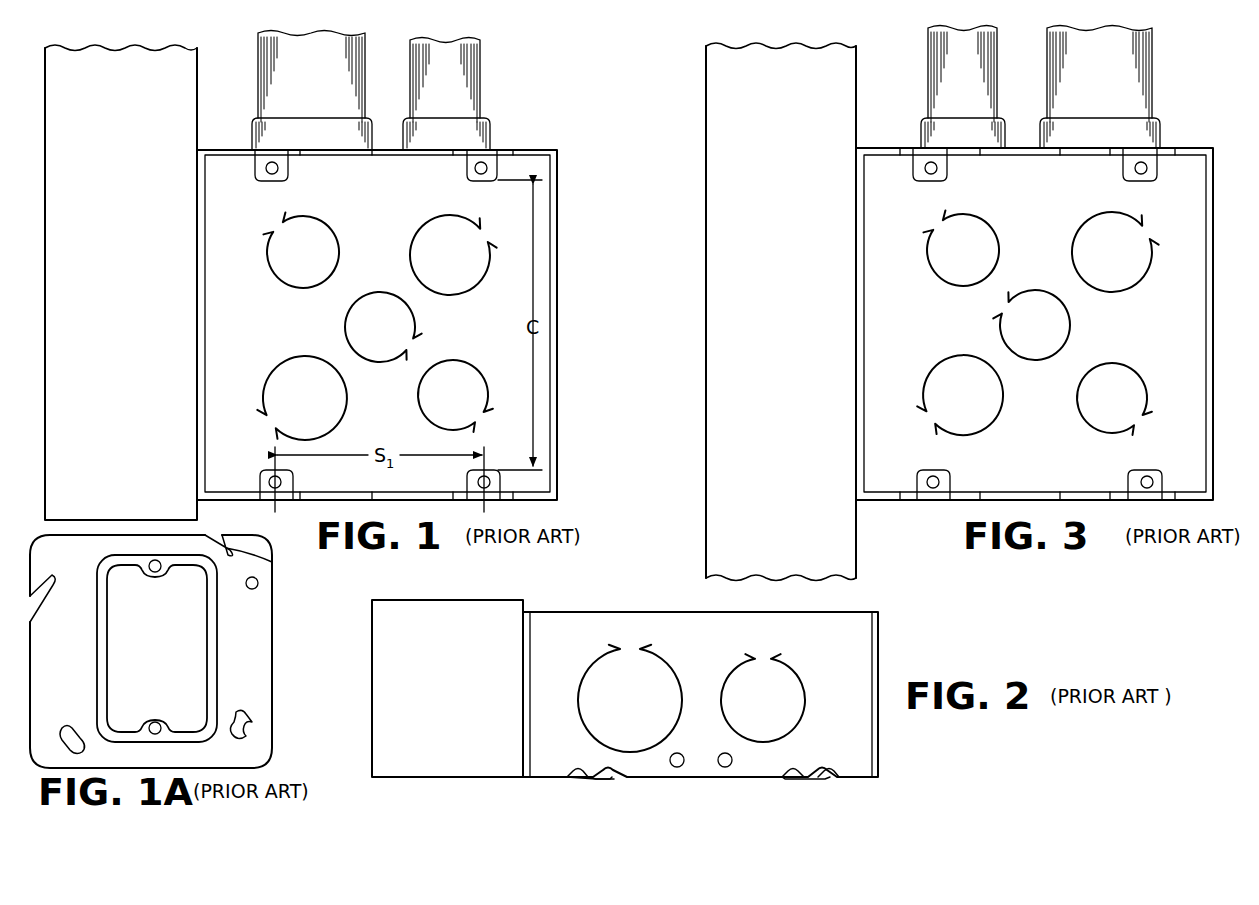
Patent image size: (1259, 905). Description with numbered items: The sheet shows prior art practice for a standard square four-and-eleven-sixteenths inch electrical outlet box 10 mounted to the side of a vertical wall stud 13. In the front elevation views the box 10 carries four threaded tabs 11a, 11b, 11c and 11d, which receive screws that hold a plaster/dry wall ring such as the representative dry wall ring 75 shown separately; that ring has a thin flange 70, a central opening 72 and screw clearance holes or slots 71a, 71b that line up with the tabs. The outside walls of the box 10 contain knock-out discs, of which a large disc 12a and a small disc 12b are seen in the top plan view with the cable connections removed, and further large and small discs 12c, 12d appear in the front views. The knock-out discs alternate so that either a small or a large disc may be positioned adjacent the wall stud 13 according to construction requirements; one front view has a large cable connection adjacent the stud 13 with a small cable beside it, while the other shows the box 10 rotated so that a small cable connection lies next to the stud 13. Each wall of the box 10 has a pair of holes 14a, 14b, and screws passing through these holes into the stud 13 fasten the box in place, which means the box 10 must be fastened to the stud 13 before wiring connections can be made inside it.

In FIG. 1, the electrical outlet box 10 is at (542, 150).
In FIG. 2, the electrical outlet box 10 is at (612, 612).
In FIG. 3, the electrical outlet box 10 is at (1182, 148).
In FIG. 1, the threaded tab 11a is at (282, 172).
In FIG. 2, the threaded tab 11a is at (588, 778).
In FIG. 3, the threaded tab 11a is at (1133, 476).
In FIG. 1, the threaded tab 11b is at (475, 172).
In FIG. 2, the threaded tab 11b is at (826, 777).
In FIG. 3, the threaded tab 11b is at (946, 474).
In FIG. 1, the threaded tab 11c is at (490, 474).
In FIG. 3, the threaded tab 11c is at (945, 174).
In FIG. 1, the threaded tab 11d is at (286, 488).
In FIG. 3, the threaded tab 11d is at (1120, 172).
In FIG. 2, the knock-out disc 12a is at (602, 678).
In FIG. 2, the knock-out disc 12b is at (788, 678).
In FIG. 1, the knock-out disc 12c is at (452, 228).
In FIG. 3, the knock-out disc 12c is at (1136, 264).
In FIG. 1, the knock-out disc 12d is at (278, 254).
In FIG. 3, the knock-out disc 12d is at (938, 256).
In FIG. 1, the wall stud 13 is at (190, 76).
In FIG. 2, the wall stud 13 is at (381, 696).
In FIG. 3, the wall stud 13 is at (856, 541).
In FIG. 2, the hole 14a is at (676, 758).
In FIG. 2, the hole 14b is at (733, 760).
In FIG. 1A, the thin flange 70 is at (252, 654).
In FIG. 1A, the screw clearance hole or slot 71a is at (80, 728).
In FIG. 1A, the screw clearance hole or slot 71b is at (45, 572).
In FIG. 1A, the central opening 72 is at (172, 612).
In FIG. 1A, the dry wall ring 75 is at (275, 590).